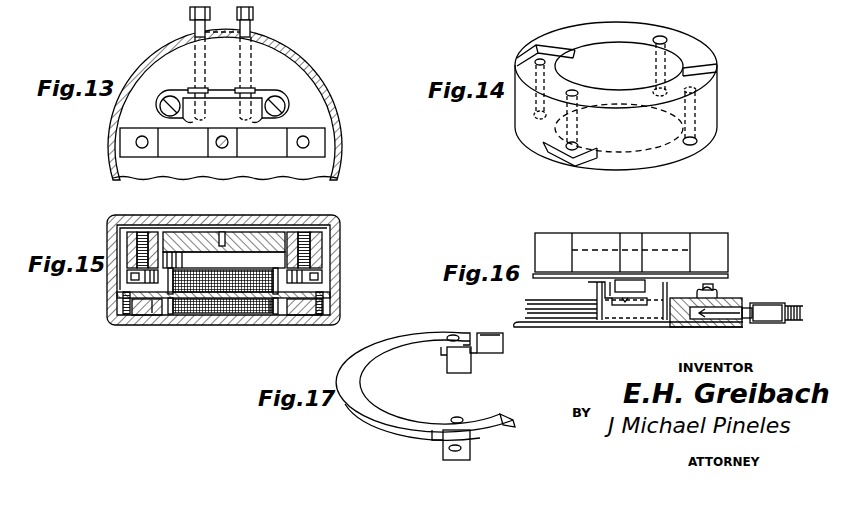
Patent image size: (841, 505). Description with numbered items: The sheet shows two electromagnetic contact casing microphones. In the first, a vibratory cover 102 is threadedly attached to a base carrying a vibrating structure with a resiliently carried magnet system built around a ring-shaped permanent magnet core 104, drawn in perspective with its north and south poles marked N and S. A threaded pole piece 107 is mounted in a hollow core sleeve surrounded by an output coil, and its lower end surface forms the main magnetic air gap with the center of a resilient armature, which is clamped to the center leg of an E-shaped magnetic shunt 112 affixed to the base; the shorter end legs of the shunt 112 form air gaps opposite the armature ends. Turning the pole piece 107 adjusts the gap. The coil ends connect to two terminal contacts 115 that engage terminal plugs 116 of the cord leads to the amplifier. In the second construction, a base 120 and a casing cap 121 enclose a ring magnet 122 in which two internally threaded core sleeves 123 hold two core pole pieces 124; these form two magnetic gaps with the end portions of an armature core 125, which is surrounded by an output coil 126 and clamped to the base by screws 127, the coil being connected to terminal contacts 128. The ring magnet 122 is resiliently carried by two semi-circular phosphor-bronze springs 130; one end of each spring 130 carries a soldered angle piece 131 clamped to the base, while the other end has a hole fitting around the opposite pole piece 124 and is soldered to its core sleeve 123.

In FIG. 13, the cover 102 is at (338, 130).
In FIG. 14, the ring-shaped permanent magnet core 104 is at (641, 30).
In FIG. 13, the pole piece 107 is at (222, 148).
In FIG. 13, the E-shaped magnetic shunt 112 is at (128, 150).
In FIG. 13, the terminal contacts 115 is at (278, 95).
In FIG. 13, the terminal plugs 116 is at (253, 13).
In FIG. 16, the terminal plugs 116 is at (772, 327).
In FIG. 15, the base 120 is at (303, 318).
In FIG. 16, the base 120 is at (668, 330).
In FIG. 15, the casing cap 121 is at (339, 246).
In FIG. 15, the ring magnet 122 is at (337, 221).
In FIG. 16, the ring magnet 122 is at (552, 242).
In FIG. 15, the core sleeves 123 is at (127, 238).
In FIG. 15, the core pole pieces 124 is at (130, 283).
In FIG. 15, the armature core 125 is at (228, 295).
In FIG. 16, the armature core 125 is at (615, 307).
In FIG. 15, the output coil 126 is at (210, 297).
In FIG. 15, the screws 127 is at (314, 325).
In FIG. 16, the screws 127 is at (633, 322).
In FIG. 16, the terminal contacts 128 is at (713, 297).
In FIG. 16, the semi-circular springs 130 is at (567, 284).
In FIG. 17, the semi-circular springs 130 is at (360, 382).
In FIG. 15, the angle piece 131 is at (152, 303).
In FIG. 16, the angle piece 131 is at (627, 312).
In FIG. 17, the angle piece 131 is at (449, 363).
In FIG. 14, the north pole N is at (655, 88).
In FIG. 14, the south pole S is at (533, 57).